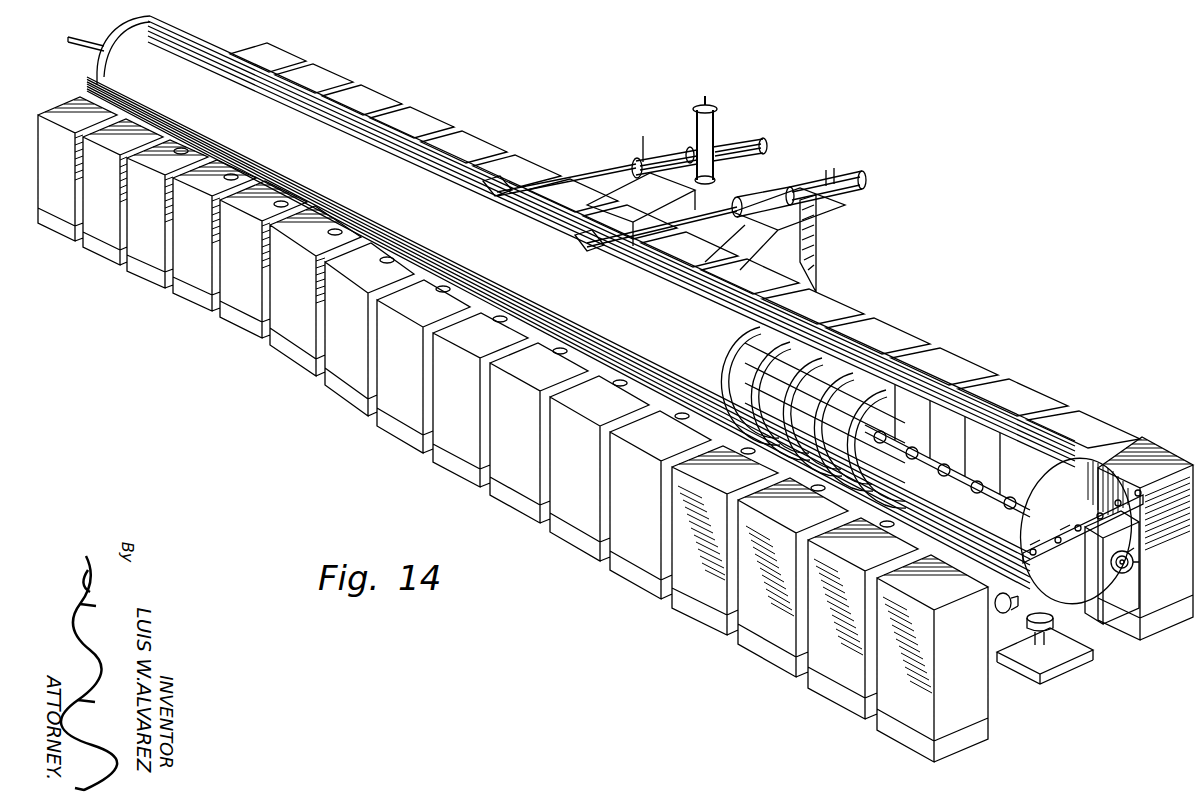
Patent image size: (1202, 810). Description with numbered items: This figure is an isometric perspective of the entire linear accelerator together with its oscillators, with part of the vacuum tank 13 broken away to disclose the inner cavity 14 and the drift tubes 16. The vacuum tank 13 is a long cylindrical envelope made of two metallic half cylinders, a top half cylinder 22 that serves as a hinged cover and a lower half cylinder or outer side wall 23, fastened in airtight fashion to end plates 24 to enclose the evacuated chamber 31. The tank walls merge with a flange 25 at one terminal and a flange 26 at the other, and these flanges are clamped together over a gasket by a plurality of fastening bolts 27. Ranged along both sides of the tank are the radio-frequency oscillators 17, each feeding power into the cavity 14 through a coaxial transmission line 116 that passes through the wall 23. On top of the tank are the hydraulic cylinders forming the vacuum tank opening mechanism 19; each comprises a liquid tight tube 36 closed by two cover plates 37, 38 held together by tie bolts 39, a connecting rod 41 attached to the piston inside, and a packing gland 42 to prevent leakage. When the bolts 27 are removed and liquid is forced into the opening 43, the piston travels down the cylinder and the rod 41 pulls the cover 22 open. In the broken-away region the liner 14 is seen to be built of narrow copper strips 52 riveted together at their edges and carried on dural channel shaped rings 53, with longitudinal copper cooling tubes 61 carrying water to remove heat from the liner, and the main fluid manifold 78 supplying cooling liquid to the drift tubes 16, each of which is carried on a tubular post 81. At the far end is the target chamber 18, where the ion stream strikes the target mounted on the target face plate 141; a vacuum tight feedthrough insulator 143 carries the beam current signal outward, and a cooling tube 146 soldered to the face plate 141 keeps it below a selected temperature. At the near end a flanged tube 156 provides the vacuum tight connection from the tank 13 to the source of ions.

The vacuum tank 13 is at (1067, 440).
The inner cavity 14 is at (869, 464).
The drift tubes 16 is at (957, 488).
The radio-frequency oscillators 17 is at (422, 120).
The target chamber 18 is at (1090, 560).
The vacuum tank opening mechanism 19 is at (731, 125).
The top half cylinder 22 is at (882, 340).
The outer side wall half cylinder 23 is at (575, 340).
The end plates 24 is at (124, 30).
The flange 25 is at (1140, 495).
The flange 26 is at (1153, 494).
The fastening bolts 27 is at (1075, 535).
The chamber 31 is at (812, 264).
The liquid tight tube 36 is at (690, 145).
The cover plate 37 is at (640, 172).
The cover plate 38 is at (768, 145).
The tie bolts 39 is at (750, 138).
The connecting rod 41 is at (575, 170).
The packing gland 42 is at (633, 157).
The opening 43 is at (643, 137).
The copper strips 52 is at (727, 372).
The channel shaped rings 53 is at (740, 355).
The cooling tubes 61 is at (712, 405).
The fluid manifold 78 is at (737, 347).
The tubular post 81 is at (916, 458).
The coaxial transmission line 116 is at (1000, 613).
The target face plate 141 is at (1130, 551).
The feedthrough insulator 143 is at (1122, 568).
The cooling tube 146 is at (1136, 564).
The flanged tube 156 is at (88, 52).